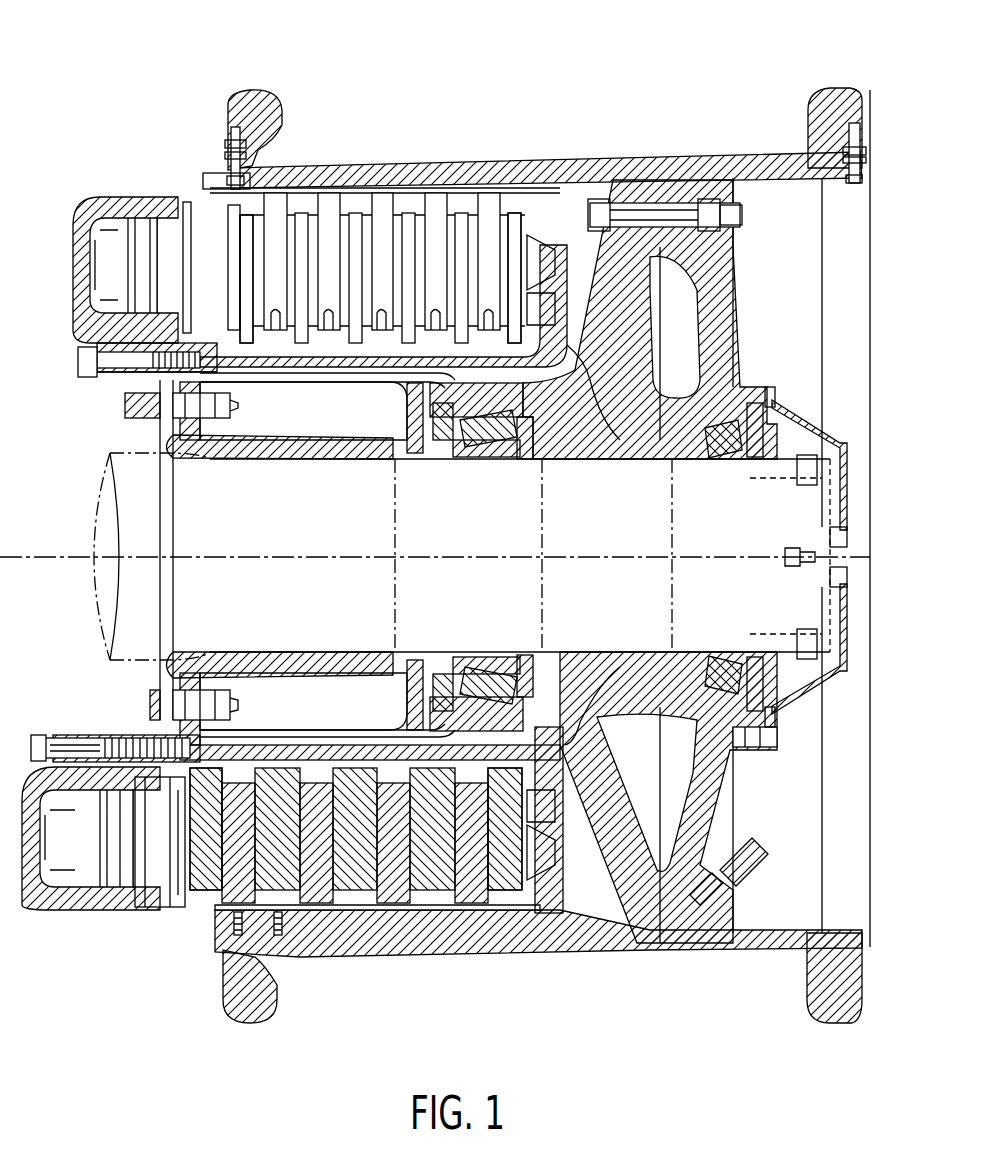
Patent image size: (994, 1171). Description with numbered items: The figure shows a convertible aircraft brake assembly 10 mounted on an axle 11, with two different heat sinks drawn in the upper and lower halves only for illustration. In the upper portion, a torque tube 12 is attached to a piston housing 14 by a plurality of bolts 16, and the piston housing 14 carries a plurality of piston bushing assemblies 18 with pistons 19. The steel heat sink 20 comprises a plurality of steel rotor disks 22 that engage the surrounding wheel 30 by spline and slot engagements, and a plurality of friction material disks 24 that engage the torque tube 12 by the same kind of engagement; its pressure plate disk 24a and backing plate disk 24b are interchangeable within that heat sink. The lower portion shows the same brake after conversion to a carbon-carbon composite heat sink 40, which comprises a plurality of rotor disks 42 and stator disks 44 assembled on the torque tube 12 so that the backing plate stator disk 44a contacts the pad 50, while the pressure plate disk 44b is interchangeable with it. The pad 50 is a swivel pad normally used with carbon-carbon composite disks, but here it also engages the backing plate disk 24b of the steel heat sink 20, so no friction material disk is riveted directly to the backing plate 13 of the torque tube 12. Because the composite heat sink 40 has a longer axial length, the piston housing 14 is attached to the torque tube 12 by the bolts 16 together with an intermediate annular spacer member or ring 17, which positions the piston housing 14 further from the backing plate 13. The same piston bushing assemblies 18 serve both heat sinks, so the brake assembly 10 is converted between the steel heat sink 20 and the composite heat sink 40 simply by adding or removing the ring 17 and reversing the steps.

The aircraft brake assembly 10 is at (152, 70).
The axle 11 is at (334, 540).
The torque tube 12 is at (363, 357).
The backing plate 13 is at (560, 805).
The piston housing 14 is at (80, 308).
The bolts 16 is at (87, 363).
The intermediate annular spacer member 17 is at (110, 735).
The piston bushing assemblies 18 is at (162, 215).
The pistons 19 is at (180, 907).
The steel heat sink 20 is at (453, 166).
The steel rotor disks 22 is at (328, 197).
The friction material disks 24 is at (350, 343).
The pressure plate disk 24a is at (240, 215).
The backing plate disk 24b is at (520, 213).
The wheel 30 is at (604, 178).
The carbon-carbon composite heat sink 40 is at (381, 948).
The rotor disks 42 is at (470, 900).
The stator disks 44 is at (353, 765).
The backing plate stator disk 44a is at (200, 882).
The pressure plate disk 44b is at (513, 893).
The pad 50 is at (540, 238).